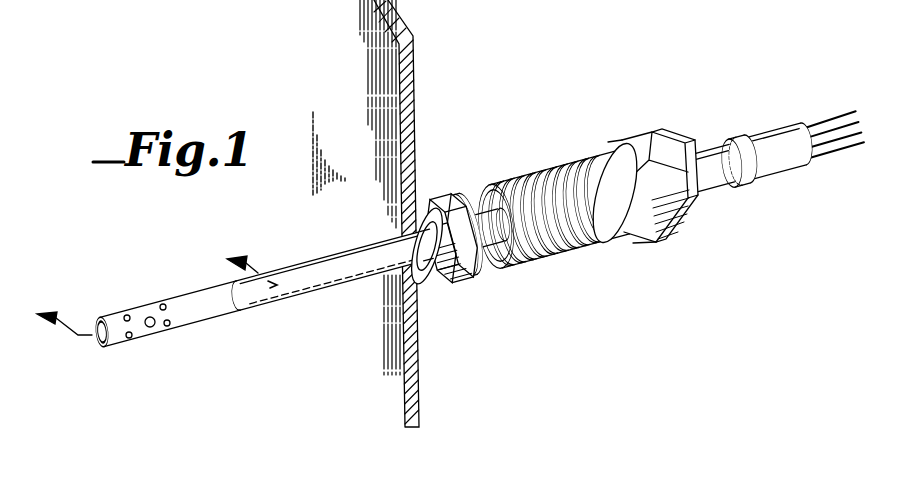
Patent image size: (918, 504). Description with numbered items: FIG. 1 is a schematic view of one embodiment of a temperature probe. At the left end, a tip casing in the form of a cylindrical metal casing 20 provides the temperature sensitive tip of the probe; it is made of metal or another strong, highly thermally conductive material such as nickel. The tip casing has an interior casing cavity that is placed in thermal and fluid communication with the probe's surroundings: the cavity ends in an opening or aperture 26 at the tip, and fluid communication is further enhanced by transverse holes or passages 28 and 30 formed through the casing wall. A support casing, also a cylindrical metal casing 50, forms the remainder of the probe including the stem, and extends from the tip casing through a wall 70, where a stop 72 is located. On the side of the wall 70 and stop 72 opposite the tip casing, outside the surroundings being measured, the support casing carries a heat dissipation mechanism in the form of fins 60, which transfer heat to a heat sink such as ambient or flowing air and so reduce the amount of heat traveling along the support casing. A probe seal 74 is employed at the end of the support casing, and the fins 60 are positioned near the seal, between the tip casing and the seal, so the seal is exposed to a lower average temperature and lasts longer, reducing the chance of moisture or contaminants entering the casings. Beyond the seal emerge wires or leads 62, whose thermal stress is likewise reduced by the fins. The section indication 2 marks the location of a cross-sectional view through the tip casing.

The section line 2- 2 is at (141, 284).
The cylindrical metal casing 20 is at (164, 296).
The opening or aperture 26 is at (98, 343).
The transverse holes or passages 28 is at (128, 315).
The transverse holes or passages 30 is at (150, 327).
The cylindrical metal casing 50 is at (343, 283).
The fins 60 is at (573, 253).
The wires or leads 62 is at (816, 157).
The wall 70 is at (416, 136).
The stop 72 is at (455, 287).
The probe seal 74 is at (657, 127).